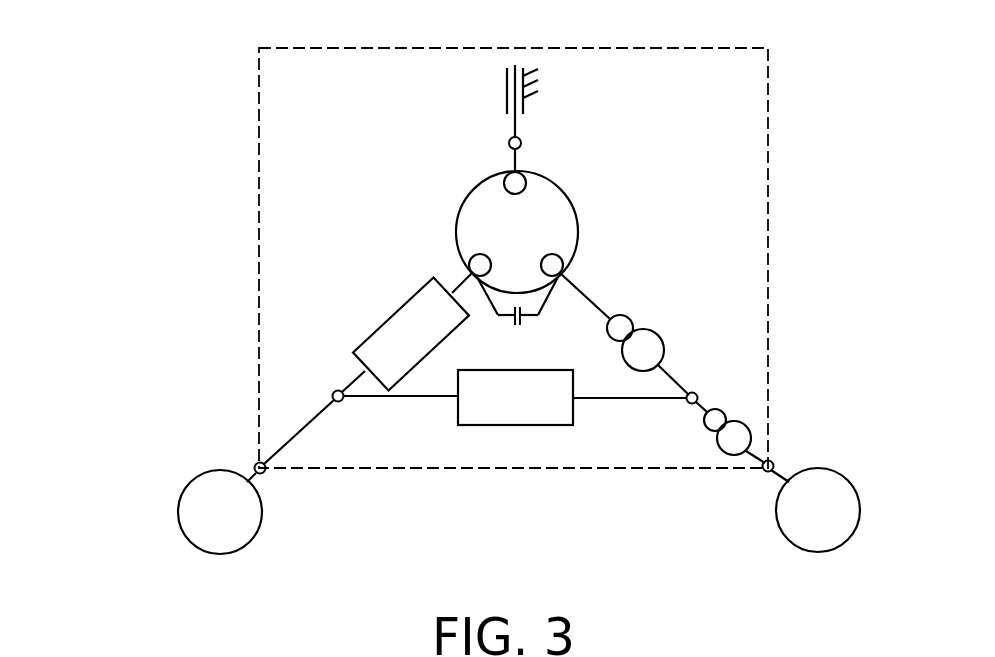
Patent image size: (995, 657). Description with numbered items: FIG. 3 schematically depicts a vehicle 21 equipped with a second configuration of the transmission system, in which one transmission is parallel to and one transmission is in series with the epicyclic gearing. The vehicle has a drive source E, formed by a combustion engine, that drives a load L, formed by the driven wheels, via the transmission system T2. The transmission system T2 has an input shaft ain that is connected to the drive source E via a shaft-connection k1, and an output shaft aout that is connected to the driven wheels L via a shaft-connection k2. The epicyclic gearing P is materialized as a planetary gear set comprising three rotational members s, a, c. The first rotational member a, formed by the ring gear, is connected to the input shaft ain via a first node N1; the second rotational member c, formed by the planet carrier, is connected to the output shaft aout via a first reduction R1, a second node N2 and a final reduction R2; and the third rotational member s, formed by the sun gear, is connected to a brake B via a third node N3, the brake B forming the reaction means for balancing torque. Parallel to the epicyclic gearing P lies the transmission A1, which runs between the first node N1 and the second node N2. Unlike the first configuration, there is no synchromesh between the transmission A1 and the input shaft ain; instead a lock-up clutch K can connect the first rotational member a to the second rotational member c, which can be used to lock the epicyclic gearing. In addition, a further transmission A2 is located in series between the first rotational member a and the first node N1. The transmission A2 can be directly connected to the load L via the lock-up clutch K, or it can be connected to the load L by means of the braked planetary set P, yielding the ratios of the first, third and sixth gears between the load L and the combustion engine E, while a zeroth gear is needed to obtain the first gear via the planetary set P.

The vehicle 21 is at (156, 126).
The transmission system T2 is at (258, 243).
The drive source E is at (220, 512).
The load L is at (815, 510).
The shaft-connection k1 is at (256, 463).
The shaft-connection k2 is at (772, 462).
The input shaft ain is at (291, 446).
The output shaft aout is at (764, 470).
The first node N1 is at (343, 402).
The second node N2 is at (689, 403).
The third node N3 is at (510, 138).
The transmission A1 is at (515, 397).
The further transmission A2 is at (407, 332).
The epicyclic gearing P is at (517, 232).
The third rotational member s is at (512, 178).
The first rotational member a is at (470, 265).
The second rotational member c is at (563, 265).
The brake B is at (538, 85).
The lock-up clutch K is at (517, 320).
The first reduction R1 is at (634, 331).
The final reduction R2 is at (718, 432).